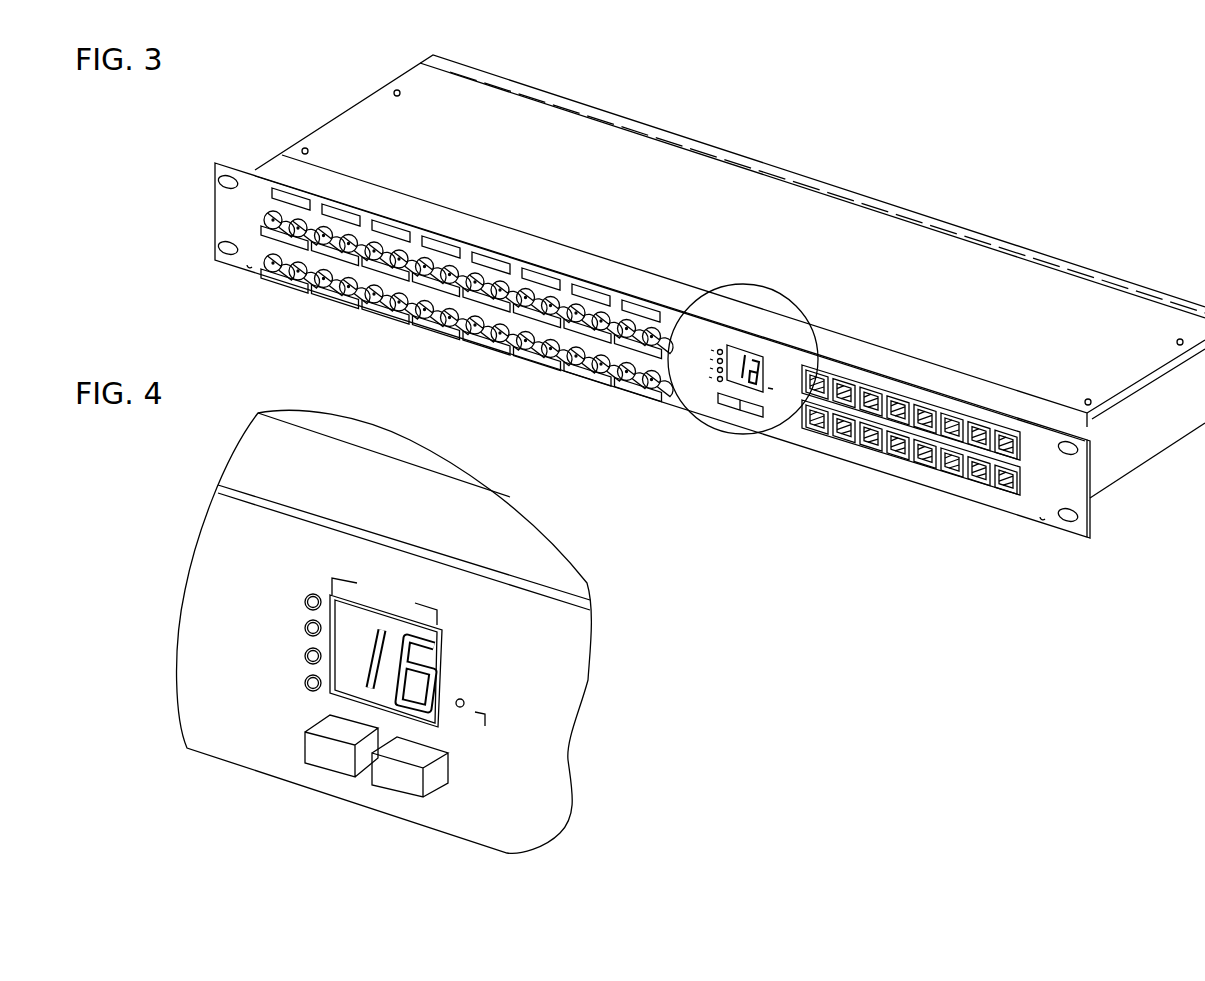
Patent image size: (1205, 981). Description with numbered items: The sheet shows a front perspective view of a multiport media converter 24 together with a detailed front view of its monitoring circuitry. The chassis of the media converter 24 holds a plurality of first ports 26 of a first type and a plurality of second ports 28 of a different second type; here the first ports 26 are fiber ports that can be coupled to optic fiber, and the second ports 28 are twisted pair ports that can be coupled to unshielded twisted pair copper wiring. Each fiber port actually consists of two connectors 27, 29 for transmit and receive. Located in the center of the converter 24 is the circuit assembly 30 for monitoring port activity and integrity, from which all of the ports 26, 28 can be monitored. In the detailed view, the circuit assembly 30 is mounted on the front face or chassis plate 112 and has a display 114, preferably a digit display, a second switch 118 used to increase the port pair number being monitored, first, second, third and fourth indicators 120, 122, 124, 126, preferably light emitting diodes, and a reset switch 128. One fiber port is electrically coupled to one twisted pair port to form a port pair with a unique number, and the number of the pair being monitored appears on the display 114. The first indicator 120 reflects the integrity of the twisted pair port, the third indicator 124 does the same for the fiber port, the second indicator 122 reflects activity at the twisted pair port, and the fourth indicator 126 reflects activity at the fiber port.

In FIG. 3, the multiport media converter 24 is at (315, 125).
In FIG. 3, the first ports 26 is at (310, 283).
In FIG. 3, the connector 27 is at (410, 317).
In FIG. 3, the second ports 28 is at (857, 445).
In FIG. 3, the connector 29 is at (449, 321).
In FIG. 3, the circuit assembly 30 is at (753, 440).
In FIG. 4, the front panel face 112 is at (502, 632).
In FIG. 4, the display 114 is at (418, 624).
In FIG. 4, the second switch 118 is at (340, 765).
In FIG. 4, the first indicator 120 is at (302, 583).
In FIG. 4, the second indicator 122 is at (293, 613).
In FIG. 4, the third indicator 124 is at (263, 643).
In FIG. 4, the fourth indicator 126 is at (288, 698).
In FIG. 4, the reset switch 128 is at (472, 701).